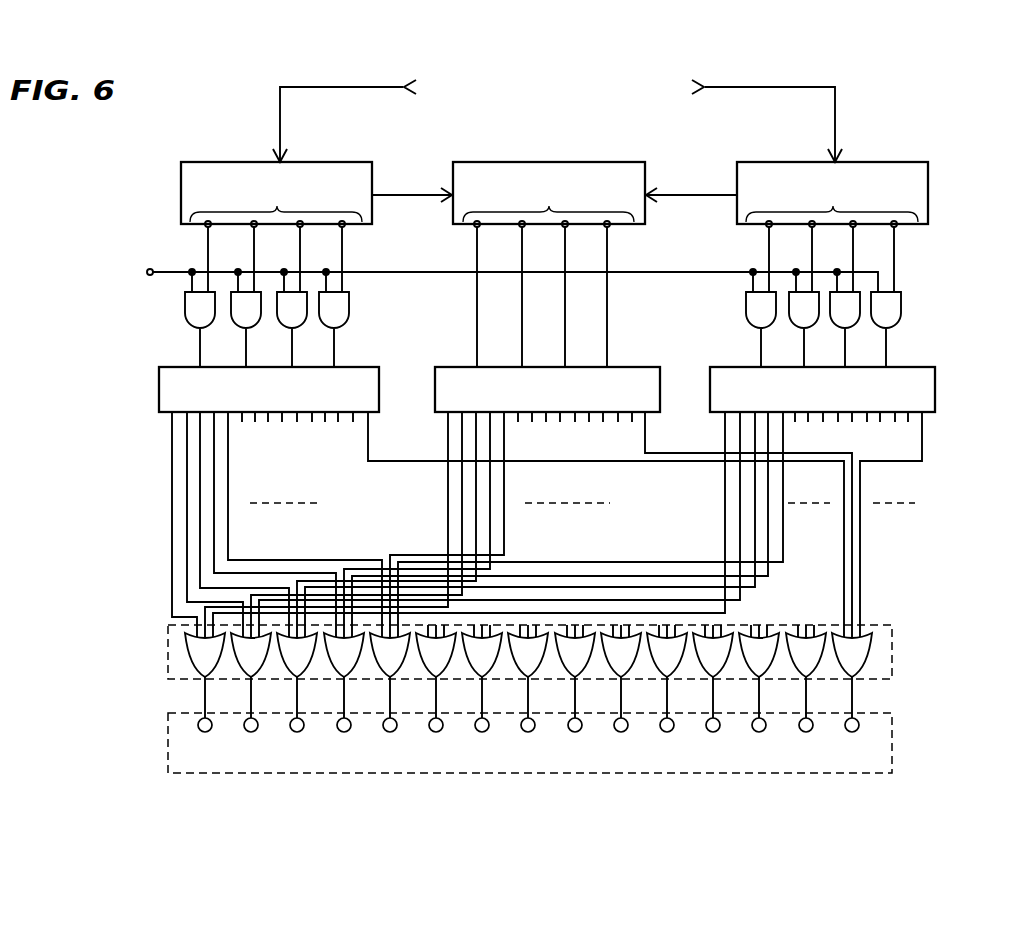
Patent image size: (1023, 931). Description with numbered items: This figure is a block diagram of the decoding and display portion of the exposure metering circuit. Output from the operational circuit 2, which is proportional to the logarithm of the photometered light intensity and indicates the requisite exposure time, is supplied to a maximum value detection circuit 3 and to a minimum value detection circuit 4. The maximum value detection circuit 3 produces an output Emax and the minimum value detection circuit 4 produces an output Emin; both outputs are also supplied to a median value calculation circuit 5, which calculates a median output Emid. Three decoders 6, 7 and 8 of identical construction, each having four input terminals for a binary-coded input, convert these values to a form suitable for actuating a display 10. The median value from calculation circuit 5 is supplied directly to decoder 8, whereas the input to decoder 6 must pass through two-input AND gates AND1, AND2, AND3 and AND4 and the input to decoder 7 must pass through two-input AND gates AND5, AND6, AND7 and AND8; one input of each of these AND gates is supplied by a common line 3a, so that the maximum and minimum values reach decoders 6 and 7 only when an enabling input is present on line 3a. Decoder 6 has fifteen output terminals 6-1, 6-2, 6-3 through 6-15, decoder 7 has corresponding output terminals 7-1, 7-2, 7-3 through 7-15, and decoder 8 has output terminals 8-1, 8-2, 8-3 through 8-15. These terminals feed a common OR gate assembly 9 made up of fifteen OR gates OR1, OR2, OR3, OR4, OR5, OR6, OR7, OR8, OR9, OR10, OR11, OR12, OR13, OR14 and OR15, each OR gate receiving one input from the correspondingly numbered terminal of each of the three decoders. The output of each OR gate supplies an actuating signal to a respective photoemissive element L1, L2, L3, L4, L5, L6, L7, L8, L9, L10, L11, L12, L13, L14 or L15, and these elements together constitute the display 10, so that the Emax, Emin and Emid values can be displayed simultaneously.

The operational circuit 2 is at (557, 119).
The maximum value detection circuit 3 is at (352, 162).
The line 3a is at (172, 272).
The minimum value detection circuit 4 is at (903, 162).
The median value calculation circuit 5 is at (644, 162).
The decoder 6 is at (372, 370).
The decoder 7 is at (934, 370).
The decoder 8 is at (636, 368).
The OR gate assembly 9 is at (892, 640).
The display 10 is at (892, 738).
The AND gate AND1 is at (185, 305).
The AND gate AND2 is at (230, 318).
The AND gate AND3 is at (300, 303).
The AND gate AND4 is at (340, 308).
The AND gate AND5 is at (752, 318).
The AND gate AND6 is at (797, 303).
The AND gate AND7 is at (843, 303).
The AND gate AND8 is at (885, 314).
The output terminal 6-1 is at (172, 434).
The output terminal 6-2 is at (187, 457).
The output terminal 6-3 is at (200, 480).
The output terminal 6-15 is at (368, 434).
The output terminal 7-1 is at (725, 466).
The output terminal 7-2 is at (740, 488).
The output terminal 7-3 is at (755, 510).
The output terminal 7-15 is at (922, 436).
The output terminal 8-1 is at (448, 466).
The output terminal 8-2 is at (462, 488).
The output terminal 8-3 is at (476, 510).
The output terminal 8-15 is at (645, 434).
The OR gate OR1 is at (193, 668).
The OR gate OR2 is at (241, 670).
The OR gate OR3 is at (287, 670).
The OR gate OR4 is at (334, 670).
The OR gate OR5 is at (380, 670).
The OR gate OR6 is at (426, 670).
The OR gate OR7 is at (472, 670).
The OR gate OR8 is at (518, 670).
The OR gate OR9 is at (565, 670).
The OR gate OR10 is at (611, 664).
The OR gate OR11 is at (657, 664).
The OR gate OR12 is at (703, 664).
The OR gate OR13 is at (749, 664).
The OR gate OR14 is at (796, 664).
The OR gate OR15 is at (862, 660).
The photoemissive element L1 is at (205, 732).
The photoemissive element L2 is at (251, 732).
The photoemissive element L3 is at (297, 732).
The photoemissive element L4 is at (344, 732).
The photoemissive element L5 is at (390, 732).
The photoemissive element L6 is at (436, 732).
The photoemissive element L7 is at (482, 732).
The photoemissive element L8 is at (528, 732).
The photoemissive element L9 is at (575, 732).
The photoemissive element L10 is at (621, 732).
The photoemissive element L11 is at (667, 732).
The photoemissive element L12 is at (713, 732).
The photoemissive element L13 is at (759, 732).
The photoemissive element L14 is at (806, 732).
The photoemissive element L15 is at (852, 732).